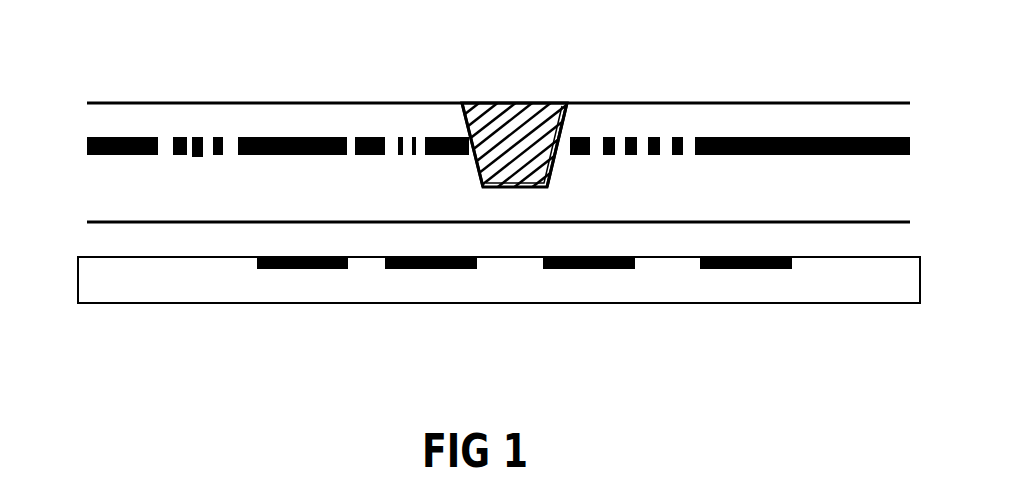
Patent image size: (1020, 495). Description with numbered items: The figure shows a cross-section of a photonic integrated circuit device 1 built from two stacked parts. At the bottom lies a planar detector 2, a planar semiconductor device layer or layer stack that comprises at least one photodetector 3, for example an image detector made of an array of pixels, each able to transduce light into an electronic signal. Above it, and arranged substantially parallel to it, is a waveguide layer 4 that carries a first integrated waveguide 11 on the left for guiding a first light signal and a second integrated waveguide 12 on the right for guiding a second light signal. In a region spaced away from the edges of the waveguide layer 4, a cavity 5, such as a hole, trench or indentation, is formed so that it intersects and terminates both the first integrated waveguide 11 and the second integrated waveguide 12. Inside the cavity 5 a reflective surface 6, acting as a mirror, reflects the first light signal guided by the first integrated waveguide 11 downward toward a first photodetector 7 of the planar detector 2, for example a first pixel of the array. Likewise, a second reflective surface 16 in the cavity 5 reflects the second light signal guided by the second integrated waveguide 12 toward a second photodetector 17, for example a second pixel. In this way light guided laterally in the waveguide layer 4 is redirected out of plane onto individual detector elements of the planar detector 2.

The photonic integrated circuit device 1 is at (122, 342).
The planar detector 2 is at (683, 304).
The photodetector 3 is at (397, 284).
The waveguide layer 4 is at (87, 145).
The cavity 5 is at (534, 92).
The reflective surface 6 is at (470, 120).
The first photodetector 7 is at (432, 269).
The first integrated waveguide 11 is at (239, 135).
The second integrated waveguide 12 is at (760, 134).
The second reflective surface 16 is at (568, 113).
The second photodetector 17 is at (573, 270).